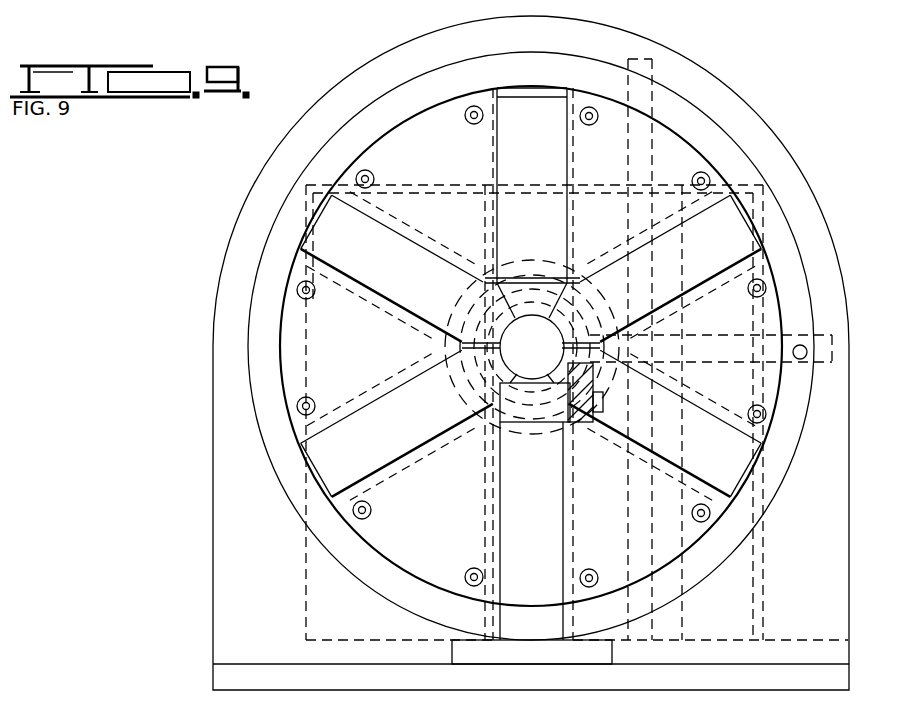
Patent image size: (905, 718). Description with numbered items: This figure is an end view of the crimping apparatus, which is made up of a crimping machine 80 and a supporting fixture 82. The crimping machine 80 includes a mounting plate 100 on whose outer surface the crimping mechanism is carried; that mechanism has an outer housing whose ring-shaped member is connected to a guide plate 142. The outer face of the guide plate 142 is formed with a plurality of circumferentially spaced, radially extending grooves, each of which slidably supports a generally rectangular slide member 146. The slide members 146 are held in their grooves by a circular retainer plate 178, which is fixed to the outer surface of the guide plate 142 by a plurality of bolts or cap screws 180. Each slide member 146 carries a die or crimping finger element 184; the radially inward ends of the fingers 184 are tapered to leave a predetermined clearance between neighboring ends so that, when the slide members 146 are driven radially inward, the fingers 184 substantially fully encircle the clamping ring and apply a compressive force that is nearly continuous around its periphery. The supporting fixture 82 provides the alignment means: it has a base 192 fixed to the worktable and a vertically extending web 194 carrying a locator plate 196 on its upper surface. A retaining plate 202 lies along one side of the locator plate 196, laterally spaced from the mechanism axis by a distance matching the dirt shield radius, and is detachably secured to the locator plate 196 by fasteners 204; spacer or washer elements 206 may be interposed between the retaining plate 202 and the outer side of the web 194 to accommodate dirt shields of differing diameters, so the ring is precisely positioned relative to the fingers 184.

The crimping machine 80 is at (717, 70).
The mounting plate 100 is at (803, 173).
The guide plate 142 is at (250, 405).
The retainer plate 178 is at (395, 578).
The bolts or cap screws 180 is at (465, 112).
The crimping finger element 184 is at (395, 232).
The supporting fixture 82 is at (532, 364).
The locator plate 196 is at (500, 396).
The slide member 146 is at (397, 373).
The web 194 is at (577, 556).
The retaining plate 202 is at (597, 377).
The spacer or washer elements 206 is at (515, 424).
The fasteners 204 is at (597, 425).
The base 192 is at (503, 655).